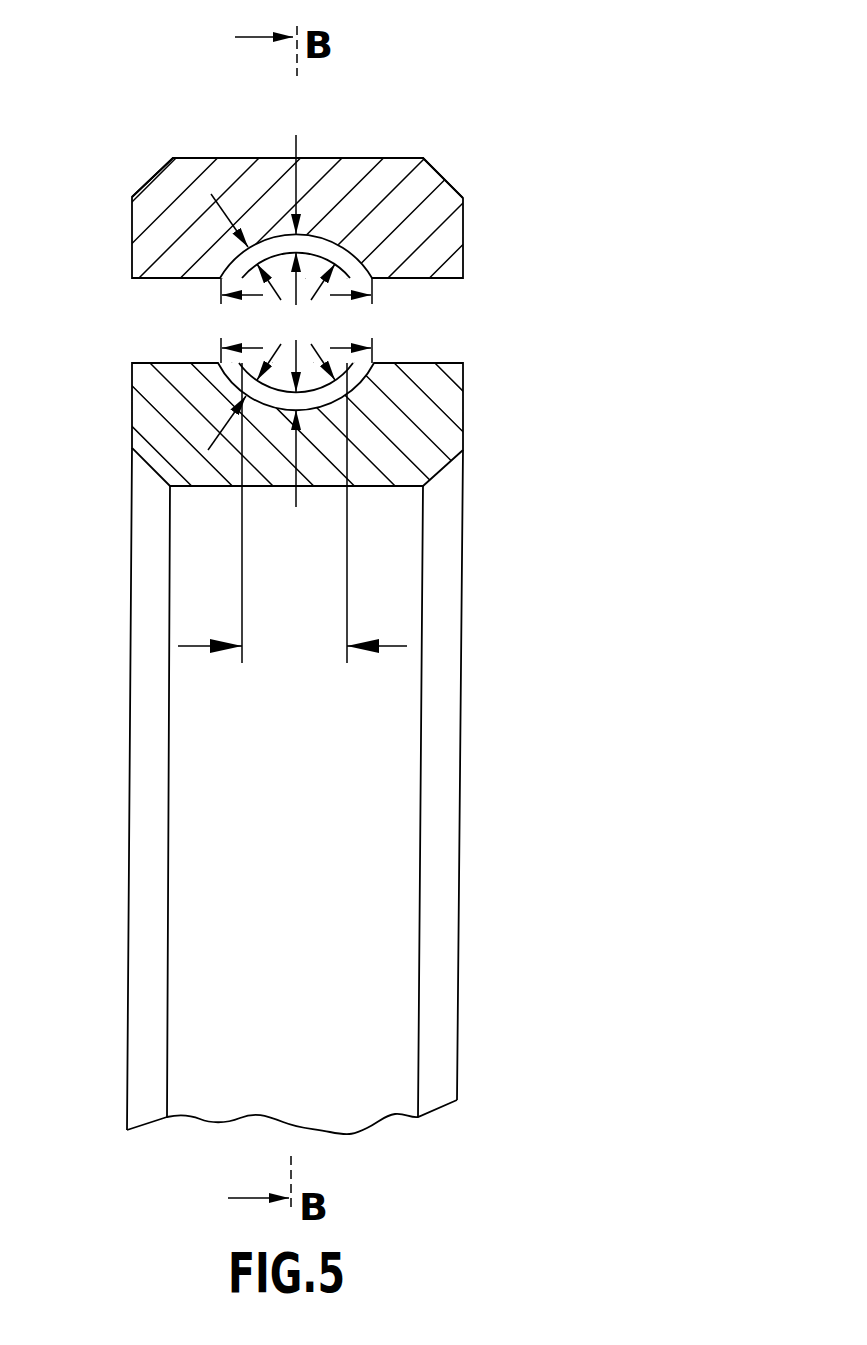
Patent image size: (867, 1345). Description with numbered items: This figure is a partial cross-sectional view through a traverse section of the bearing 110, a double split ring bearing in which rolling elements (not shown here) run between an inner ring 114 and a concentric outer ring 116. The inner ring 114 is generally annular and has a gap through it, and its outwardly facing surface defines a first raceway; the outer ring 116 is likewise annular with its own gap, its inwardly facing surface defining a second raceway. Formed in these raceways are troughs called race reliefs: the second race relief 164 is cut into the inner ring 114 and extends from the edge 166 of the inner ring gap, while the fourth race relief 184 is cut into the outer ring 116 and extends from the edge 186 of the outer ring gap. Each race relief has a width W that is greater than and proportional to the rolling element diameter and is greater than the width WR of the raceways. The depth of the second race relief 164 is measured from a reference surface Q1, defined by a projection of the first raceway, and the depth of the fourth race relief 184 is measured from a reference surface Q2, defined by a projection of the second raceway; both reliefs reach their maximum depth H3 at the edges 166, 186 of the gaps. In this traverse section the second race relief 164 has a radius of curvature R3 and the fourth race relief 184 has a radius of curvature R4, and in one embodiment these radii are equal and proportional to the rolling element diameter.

The bearing 110 is at (464, 50).
The inner ring 114 is at (463, 415).
The outer ring 116 is at (427, 178).
The second race relief 164 is at (308, 362).
The edge 166 is at (162, 448).
The fourth race relief 184 is at (305, 255).
The edge 186 is at (163, 198).
The maximum depth H3 is at (213, 199).
The reference surface Q1 is at (272, 372).
The reference surface Q2 is at (292, 254).
The width of race relief W is at (282, 361).
The radius of curvature R3 is at (306, 362).
The radius of curvature R4 is at (307, 277).
The width of raceway WR is at (296, 648).